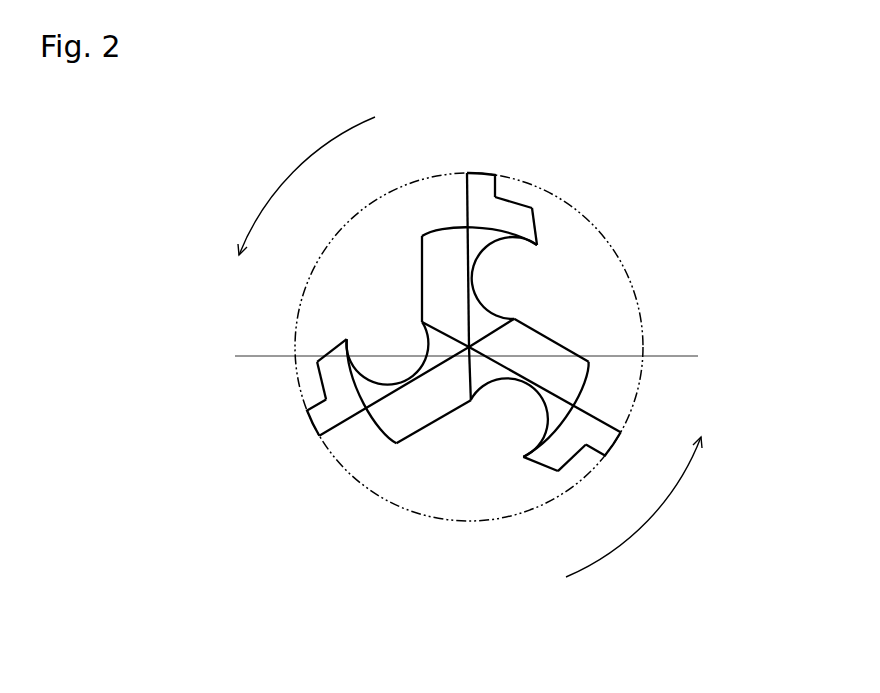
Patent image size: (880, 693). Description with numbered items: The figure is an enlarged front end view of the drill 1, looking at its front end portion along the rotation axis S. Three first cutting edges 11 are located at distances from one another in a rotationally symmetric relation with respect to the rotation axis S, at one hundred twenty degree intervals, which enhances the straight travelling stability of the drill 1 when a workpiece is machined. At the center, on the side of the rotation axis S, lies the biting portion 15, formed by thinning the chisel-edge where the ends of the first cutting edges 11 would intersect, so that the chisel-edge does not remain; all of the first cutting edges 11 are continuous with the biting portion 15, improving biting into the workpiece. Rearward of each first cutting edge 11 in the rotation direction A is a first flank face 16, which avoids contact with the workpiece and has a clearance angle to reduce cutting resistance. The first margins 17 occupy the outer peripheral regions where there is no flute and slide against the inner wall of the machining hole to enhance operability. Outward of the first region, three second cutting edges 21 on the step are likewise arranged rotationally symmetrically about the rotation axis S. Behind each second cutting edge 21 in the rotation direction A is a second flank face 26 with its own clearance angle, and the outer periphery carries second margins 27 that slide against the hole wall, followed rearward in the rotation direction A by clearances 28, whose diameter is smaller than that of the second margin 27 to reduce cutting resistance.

The drill 1 is at (674, 207).
The first cutting edge 11 is at (422, 272).
The biting portion 15 is at (463, 345).
The first flank face 16 is at (530, 362).
The first margin 17 is at (583, 395).
The second cutting edge 21 is at (466, 203).
The second flank face 26 is at (560, 445).
The second margin 27 is at (614, 442).
The clearance 28 is at (571, 459).
The rotation axis S is at (465, 347).
The rotation direction A is at (470, 347).